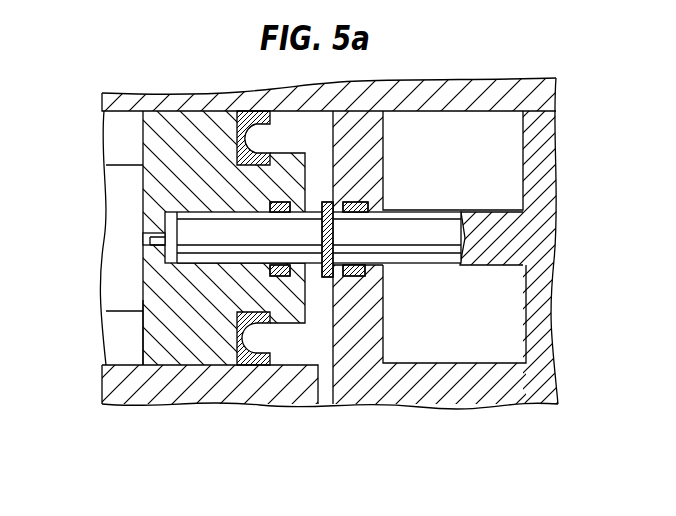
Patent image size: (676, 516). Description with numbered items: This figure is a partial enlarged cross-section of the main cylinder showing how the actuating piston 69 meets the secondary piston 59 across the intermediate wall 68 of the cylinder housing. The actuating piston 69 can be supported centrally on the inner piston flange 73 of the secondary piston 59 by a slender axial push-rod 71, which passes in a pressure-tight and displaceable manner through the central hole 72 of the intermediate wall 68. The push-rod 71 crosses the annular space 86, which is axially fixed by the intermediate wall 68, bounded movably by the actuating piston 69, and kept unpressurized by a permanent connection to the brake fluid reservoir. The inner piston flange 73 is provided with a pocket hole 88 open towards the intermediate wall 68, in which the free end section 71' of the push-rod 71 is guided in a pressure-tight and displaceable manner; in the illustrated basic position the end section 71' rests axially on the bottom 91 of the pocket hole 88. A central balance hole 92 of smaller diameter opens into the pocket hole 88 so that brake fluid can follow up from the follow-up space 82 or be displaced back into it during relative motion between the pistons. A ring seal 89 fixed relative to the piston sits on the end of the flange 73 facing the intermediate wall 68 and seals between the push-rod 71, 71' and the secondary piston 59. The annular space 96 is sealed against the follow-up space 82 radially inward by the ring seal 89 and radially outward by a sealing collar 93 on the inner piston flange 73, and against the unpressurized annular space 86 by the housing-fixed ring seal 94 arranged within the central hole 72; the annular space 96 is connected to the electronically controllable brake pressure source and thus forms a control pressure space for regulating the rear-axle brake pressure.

The secondary piston 59 is at (143, 333).
The intermediate wall 68 is at (366, 328).
The actuating piston 69 is at (538, 196).
The axial push-rod 71 is at (317, 216).
The free end section of the axial push-rod 71' is at (319, 354).
The central hole 72 is at (377, 204).
The inner piston flange 73 is at (160, 337).
The follow-up space 82 is at (118, 141).
The annular space 86 is at (480, 343).
The pocket hole 88 is at (208, 266).
The ring seal 89 is at (277, 327).
The bottom of the pocket hole 91 is at (157, 240).
The slot 92 is at (142, 240).
The sealing collar 93 is at (268, 130).
The ring seal 94 is at (365, 273).
The annular space 96 is at (287, 357).